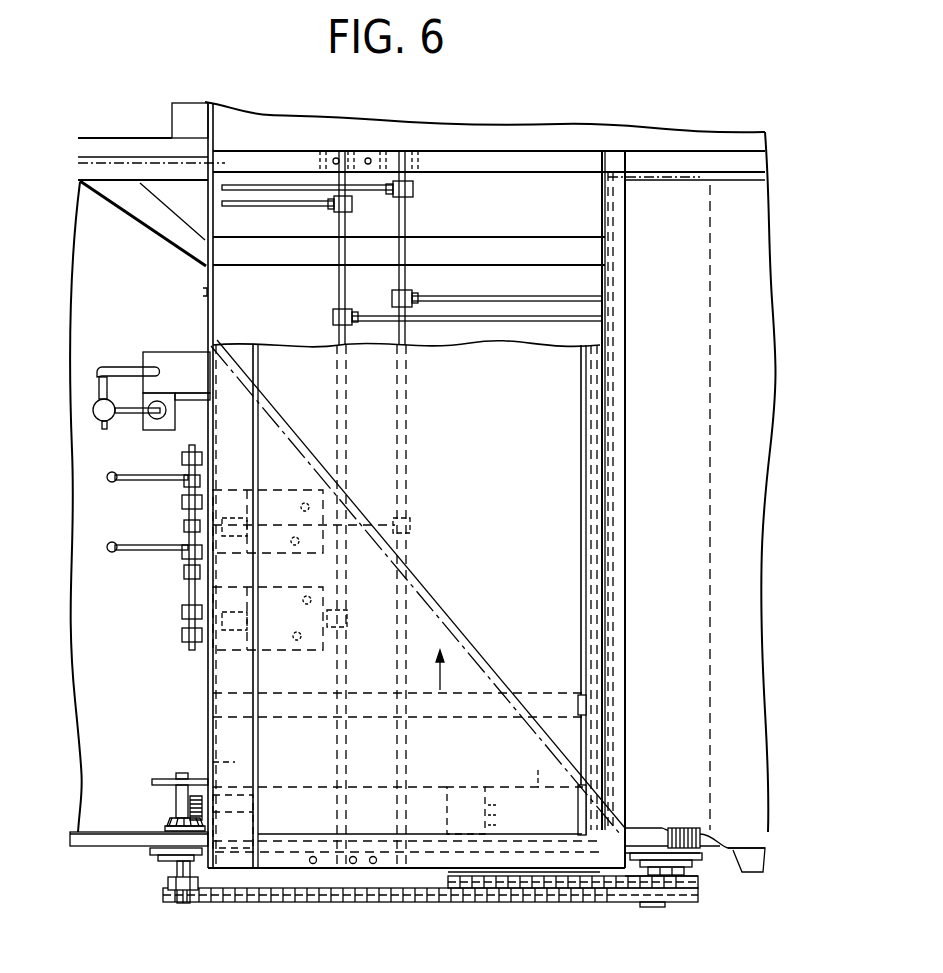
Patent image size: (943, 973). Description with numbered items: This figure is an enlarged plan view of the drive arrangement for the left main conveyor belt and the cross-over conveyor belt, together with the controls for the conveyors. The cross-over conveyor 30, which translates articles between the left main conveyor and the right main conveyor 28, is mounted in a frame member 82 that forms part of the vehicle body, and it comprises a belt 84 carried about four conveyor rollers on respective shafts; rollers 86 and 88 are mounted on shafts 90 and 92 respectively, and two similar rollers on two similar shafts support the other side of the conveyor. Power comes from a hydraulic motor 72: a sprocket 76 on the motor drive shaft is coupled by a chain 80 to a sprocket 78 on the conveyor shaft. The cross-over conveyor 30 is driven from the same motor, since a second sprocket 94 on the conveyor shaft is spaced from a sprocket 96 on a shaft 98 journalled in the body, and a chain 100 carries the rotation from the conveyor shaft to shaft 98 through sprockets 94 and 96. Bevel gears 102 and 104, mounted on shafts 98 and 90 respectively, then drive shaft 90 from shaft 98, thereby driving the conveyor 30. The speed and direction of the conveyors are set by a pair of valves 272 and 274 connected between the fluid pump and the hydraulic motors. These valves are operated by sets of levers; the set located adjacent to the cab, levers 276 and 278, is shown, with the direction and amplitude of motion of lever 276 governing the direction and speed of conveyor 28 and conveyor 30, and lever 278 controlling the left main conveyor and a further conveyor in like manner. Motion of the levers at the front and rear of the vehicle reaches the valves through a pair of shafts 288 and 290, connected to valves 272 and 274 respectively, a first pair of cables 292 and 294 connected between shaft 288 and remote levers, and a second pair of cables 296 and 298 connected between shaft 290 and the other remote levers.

The right main conveyor 28 is at (752, 760).
The cross-over conveyor 30 is at (204, 324).
The hydraulic motor 72 is at (470, 787).
The sprocket 76 is at (462, 888).
The sprocket 78 is at (700, 887).
The chain 80 is at (552, 888).
The frame member 82 is at (220, 715).
The belt 84 is at (568, 556).
The roller 86 is at (538, 770).
The roller 88 is at (540, 692).
The shaft 90 is at (242, 784).
The shaft 92 is at (233, 693).
The second sprocket 94 is at (698, 903).
The sprocket 96 is at (167, 884).
The shaft 98 is at (176, 872).
The chain 100 is at (302, 908).
The bevel gear 102 is at (166, 824).
The bevel gear 104 is at (196, 796).
The valve 272 is at (280, 628).
The valve 274 is at (281, 510).
The lever 276 is at (110, 543).
The lever 278 is at (110, 473).
The shaft 288 is at (338, 290).
The shaft 290 is at (399, 345).
The cable 292 is at (264, 205).
The cable 294 is at (285, 188).
The cable 296 is at (432, 322).
The cable 298 is at (438, 297).